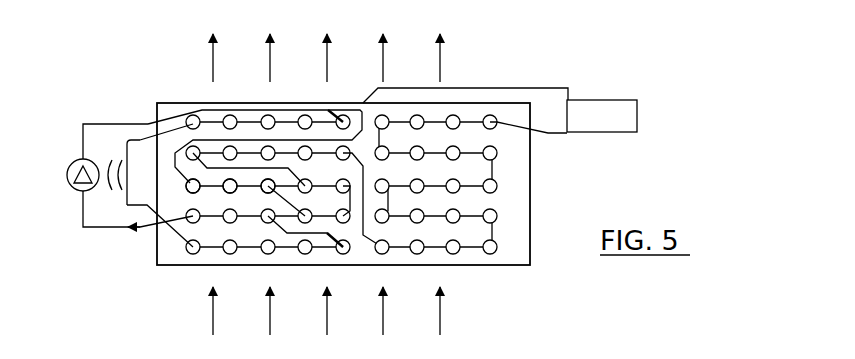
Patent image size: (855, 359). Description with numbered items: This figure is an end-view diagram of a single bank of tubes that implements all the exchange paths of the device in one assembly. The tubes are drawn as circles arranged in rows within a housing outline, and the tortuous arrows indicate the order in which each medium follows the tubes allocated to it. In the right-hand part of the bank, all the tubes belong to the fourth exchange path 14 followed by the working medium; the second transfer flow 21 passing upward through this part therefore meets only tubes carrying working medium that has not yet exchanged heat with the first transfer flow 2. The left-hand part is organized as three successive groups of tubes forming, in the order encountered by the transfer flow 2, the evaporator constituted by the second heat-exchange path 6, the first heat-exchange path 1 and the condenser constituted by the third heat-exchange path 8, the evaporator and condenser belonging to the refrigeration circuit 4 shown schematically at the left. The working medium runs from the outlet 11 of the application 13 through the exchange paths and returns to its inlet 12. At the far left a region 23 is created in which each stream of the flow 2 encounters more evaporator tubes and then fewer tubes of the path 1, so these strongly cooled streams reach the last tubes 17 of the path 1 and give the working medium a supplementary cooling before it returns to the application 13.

The first heat-exchange path 1 is at (207, 196).
The transfer path 2 is at (330, 342).
The refrigeration circuit 4 is at (98, 236).
The second heat-exchange path 6 is at (178, 252).
The third heat-exchange path 8 is at (188, 98).
The outlet 11 is at (608, 134).
The inlet 12 is at (604, 87).
The application 13 is at (602, 116).
The fourth exchange path 14 is at (478, 264).
The last tubes 17 is at (188, 181).
The second transfer flow 21 is at (450, 342).
The region 23 is at (290, 270).